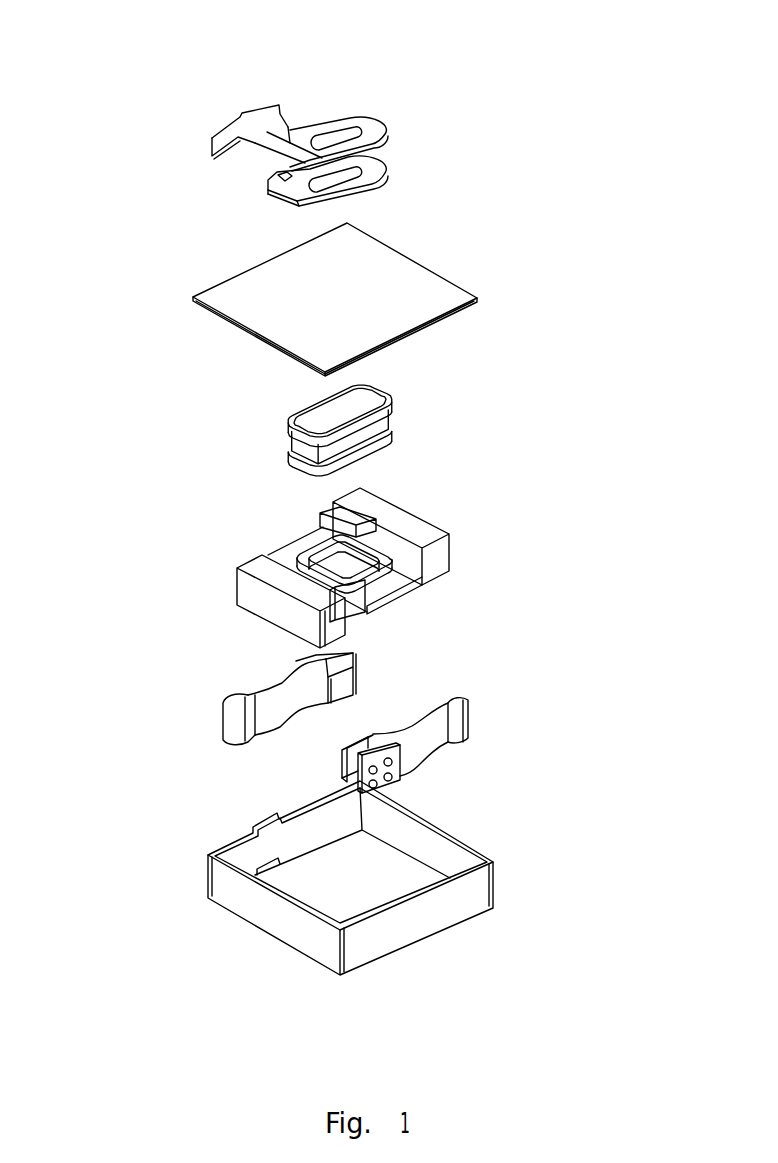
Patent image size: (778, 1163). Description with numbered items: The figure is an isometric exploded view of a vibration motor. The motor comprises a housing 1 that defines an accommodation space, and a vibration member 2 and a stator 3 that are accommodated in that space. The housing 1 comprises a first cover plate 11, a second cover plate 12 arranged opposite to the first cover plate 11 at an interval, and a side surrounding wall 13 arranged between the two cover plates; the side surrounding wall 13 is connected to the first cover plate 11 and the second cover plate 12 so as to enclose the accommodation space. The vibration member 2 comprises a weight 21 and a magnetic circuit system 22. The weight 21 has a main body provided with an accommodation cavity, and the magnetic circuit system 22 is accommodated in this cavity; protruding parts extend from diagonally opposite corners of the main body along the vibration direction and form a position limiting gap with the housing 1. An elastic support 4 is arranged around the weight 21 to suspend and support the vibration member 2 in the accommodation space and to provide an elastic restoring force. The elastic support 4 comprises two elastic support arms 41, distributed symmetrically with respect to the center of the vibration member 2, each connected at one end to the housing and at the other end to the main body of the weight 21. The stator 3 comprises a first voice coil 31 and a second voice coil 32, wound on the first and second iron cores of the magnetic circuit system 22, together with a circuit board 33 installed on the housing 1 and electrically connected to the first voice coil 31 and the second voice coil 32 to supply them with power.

The housing 1 is at (381, 283).
The first cover plate 11 is at (430, 278).
The second cover plate 12 is at (415, 870).
The side surrounding wall 13 is at (411, 878).
The vibration member 2 is at (443, 505).
The weight 21 is at (420, 533).
The magnetic circuit system 22 is at (387, 400).
The stator 3 is at (352, 122).
The first voice coil 31 is at (363, 130).
The second voice coil 32 is at (353, 170).
The circuit board 33 is at (293, 130).
The elastic support 4 is at (324, 696).
The elastic support arm 41 is at (230, 703).